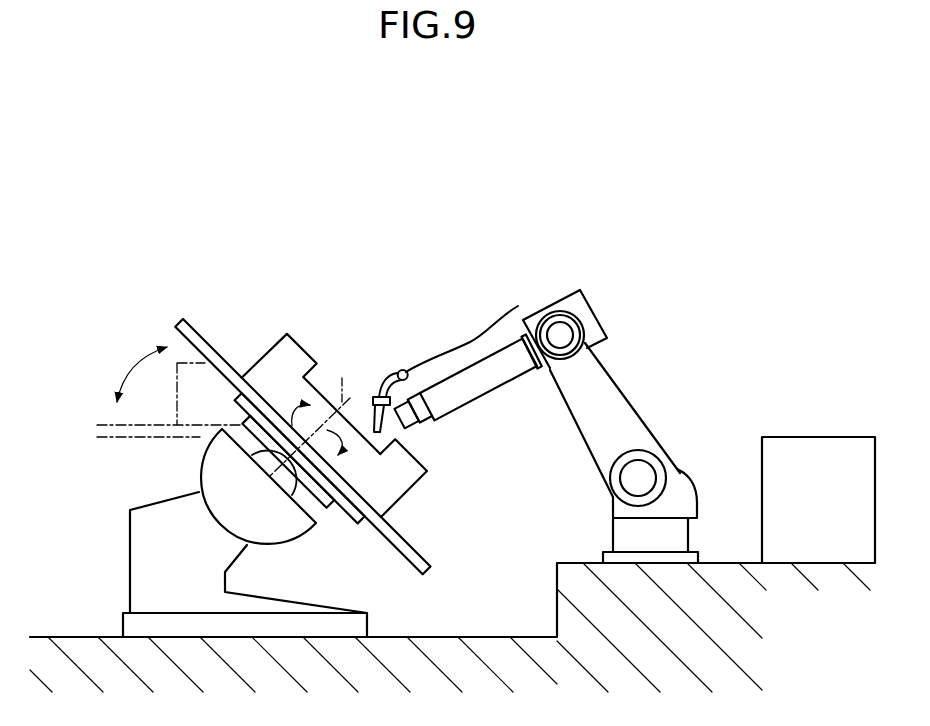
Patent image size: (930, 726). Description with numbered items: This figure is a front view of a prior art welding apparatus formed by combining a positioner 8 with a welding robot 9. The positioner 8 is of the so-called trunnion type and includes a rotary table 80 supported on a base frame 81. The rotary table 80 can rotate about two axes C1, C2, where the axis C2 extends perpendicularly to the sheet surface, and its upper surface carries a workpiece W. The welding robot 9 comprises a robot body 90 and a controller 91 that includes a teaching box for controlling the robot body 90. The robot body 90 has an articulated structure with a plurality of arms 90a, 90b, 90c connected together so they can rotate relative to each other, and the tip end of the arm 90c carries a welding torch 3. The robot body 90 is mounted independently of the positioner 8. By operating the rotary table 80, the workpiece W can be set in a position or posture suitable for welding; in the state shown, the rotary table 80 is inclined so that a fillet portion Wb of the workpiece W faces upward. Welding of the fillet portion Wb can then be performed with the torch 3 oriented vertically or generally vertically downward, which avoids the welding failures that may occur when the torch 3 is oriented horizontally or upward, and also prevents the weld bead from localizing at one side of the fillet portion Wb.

The positioner 8 is at (211, 491).
The rotary table 80 is at (192, 329).
The base frame 81 is at (143, 573).
The workpiece W is at (278, 360).
The fillet portion Wb is at (388, 441).
The axis C1 is at (342, 383).
The axis C2 is at (265, 477).
The welding torch 3 is at (375, 431).
The welding robot 9 is at (549, 416).
The robot body 90 is at (576, 426).
The arm 90a is at (680, 494).
The arm 90b is at (593, 435).
The arm 90c is at (475, 387).
The controller 91 is at (793, 457).